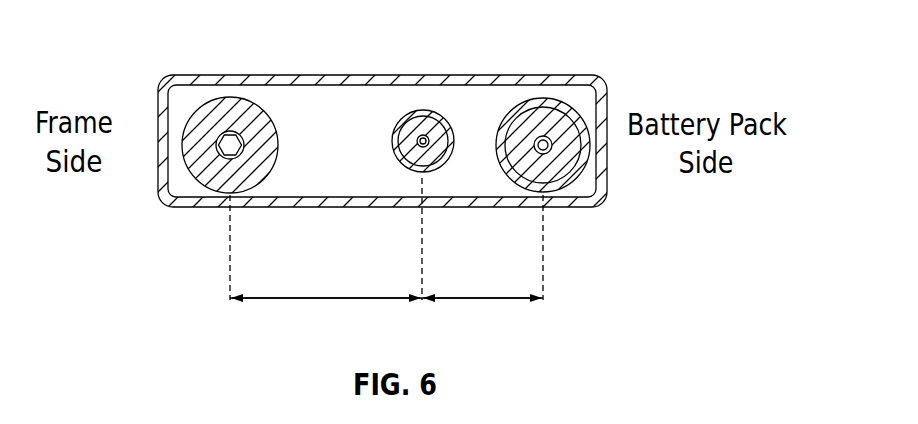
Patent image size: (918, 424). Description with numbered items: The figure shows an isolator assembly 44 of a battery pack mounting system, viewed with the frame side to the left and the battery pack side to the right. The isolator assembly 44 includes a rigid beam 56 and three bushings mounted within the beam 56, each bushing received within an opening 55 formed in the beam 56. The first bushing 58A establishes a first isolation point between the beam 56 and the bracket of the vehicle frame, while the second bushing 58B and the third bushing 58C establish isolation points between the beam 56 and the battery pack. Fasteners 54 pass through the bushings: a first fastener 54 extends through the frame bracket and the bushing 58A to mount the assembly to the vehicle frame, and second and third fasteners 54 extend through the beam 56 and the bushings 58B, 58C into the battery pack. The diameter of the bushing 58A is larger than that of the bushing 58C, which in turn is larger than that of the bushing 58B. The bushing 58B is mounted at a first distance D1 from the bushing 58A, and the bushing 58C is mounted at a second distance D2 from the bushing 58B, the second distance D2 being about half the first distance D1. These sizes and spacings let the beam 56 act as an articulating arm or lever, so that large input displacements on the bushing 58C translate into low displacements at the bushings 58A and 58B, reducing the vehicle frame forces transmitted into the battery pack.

The isolator assembly 44 is at (473, 14).
The fastener 54 is at (228, 133).
The opening 55 is at (257, 107).
The beam 56 is at (343, 80).
The first bushing 58A is at (224, 170).
The second bushing 58B is at (430, 167).
The third bushing 58C is at (557, 170).
The first distance D1 is at (325, 298).
The second distance D2 is at (482, 298).